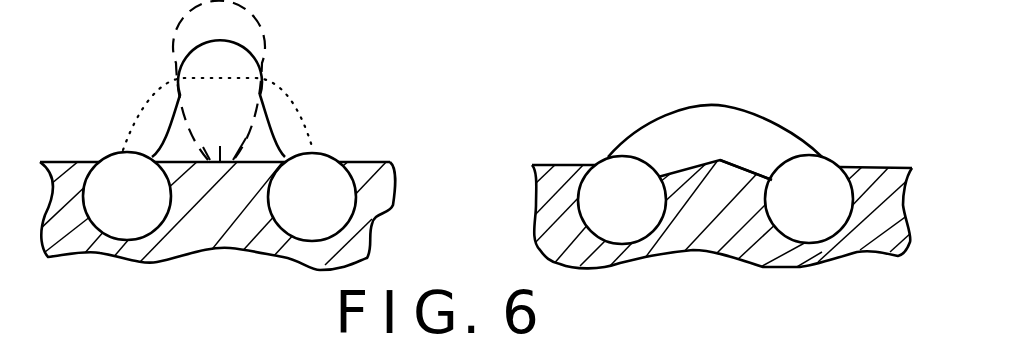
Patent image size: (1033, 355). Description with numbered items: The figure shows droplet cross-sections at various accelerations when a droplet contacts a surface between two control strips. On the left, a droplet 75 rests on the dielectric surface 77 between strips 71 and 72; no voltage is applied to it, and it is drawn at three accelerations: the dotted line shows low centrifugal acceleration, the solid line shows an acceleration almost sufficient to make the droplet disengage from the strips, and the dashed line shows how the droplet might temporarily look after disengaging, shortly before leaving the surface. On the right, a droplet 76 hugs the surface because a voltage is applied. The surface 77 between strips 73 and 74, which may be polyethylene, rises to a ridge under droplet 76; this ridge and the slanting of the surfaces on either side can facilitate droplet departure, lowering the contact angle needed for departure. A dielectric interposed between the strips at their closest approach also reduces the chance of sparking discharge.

The control strip 71 is at (127, 196).
The control strip 72 is at (312, 197).
The control strip 73 is at (622, 200).
The control strip 74 is at (809, 199).
The droplet 75 is at (218, 80).
The droplet 76 is at (715, 131).
The dielectric surface 77 is at (748, 156).